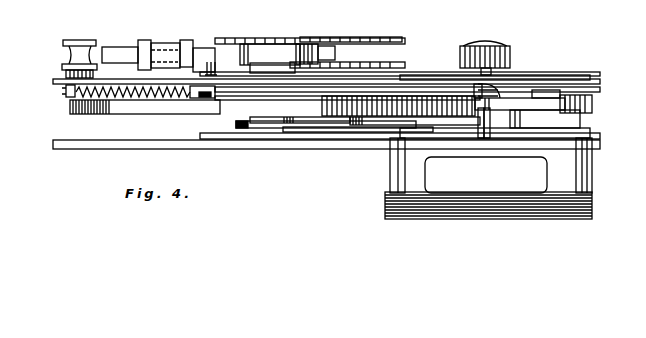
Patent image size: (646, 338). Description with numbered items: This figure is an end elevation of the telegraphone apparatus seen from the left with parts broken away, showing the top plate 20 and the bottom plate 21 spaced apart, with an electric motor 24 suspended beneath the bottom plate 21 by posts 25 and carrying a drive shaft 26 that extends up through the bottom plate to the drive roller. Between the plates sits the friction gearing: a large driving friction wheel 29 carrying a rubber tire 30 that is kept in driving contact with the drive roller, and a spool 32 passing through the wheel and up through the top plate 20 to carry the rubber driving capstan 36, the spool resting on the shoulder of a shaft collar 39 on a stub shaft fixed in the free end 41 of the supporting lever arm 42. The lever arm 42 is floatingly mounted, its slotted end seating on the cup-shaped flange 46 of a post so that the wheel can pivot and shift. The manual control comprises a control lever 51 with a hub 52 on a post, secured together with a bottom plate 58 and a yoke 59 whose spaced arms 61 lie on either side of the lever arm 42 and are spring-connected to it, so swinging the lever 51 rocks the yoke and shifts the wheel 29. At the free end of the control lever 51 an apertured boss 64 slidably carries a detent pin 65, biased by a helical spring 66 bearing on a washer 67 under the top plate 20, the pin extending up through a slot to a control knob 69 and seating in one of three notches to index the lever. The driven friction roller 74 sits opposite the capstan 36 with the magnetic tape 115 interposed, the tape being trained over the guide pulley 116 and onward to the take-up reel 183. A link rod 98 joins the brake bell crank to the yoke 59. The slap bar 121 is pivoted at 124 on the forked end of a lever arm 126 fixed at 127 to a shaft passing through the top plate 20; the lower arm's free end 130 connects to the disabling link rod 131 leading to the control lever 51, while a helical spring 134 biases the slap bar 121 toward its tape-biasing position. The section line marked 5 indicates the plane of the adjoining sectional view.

The section line 5 is at (106, 20).
The top plate 20 is at (586, 76).
The bottom plate 21 is at (135, 150).
The electric motor 24 is at (592, 206).
The posts 25 is at (395, 165).
The drive shaft 26 is at (506, 148).
The driving friction wheel 29 is at (120, 122).
The rubber tire 30 is at (72, 106).
The spool 32 is at (307, 55).
The driving roller or capstan 36 is at (272, 68).
The shaft flange or collar 39 is at (283, 124).
The free end of supporting lever arm 41 is at (242, 129).
The supporting lever arm 42 is at (338, 128).
The cup-shaped flange 46 is at (386, 134).
The control lever 51 is at (525, 98).
The hub 52 is at (582, 100).
The bottom plate of hub 58 is at (590, 135).
The yoke 59 is at (582, 120).
The yoke arms 61 is at (358, 126).
The apertured boss 64 is at (478, 110).
The detent pin 65 is at (488, 112).
The helical spring 66 is at (398, 84).
The washer 67 is at (504, 82).
The control knob 69 is at (506, 50).
The driven friction wheel or roller 74 is at (246, 42).
The link rod 98 is at (556, 108).
The string element or magnetic tape 115 is at (345, 56).
The guide pulley 116 is at (66, 54).
The slap bar 121 is at (113, 52).
The pivot of slap bar 124 is at (148, 42).
The lever arm 126 is at (178, 56).
The fixing point of lever arm 127 is at (208, 60).
The free end of lever arm 130 is at (205, 99).
The disabling link rod 131 is at (390, 82).
The helical spring 134 is at (67, 91).
The take-up reel 183 is at (343, 40).